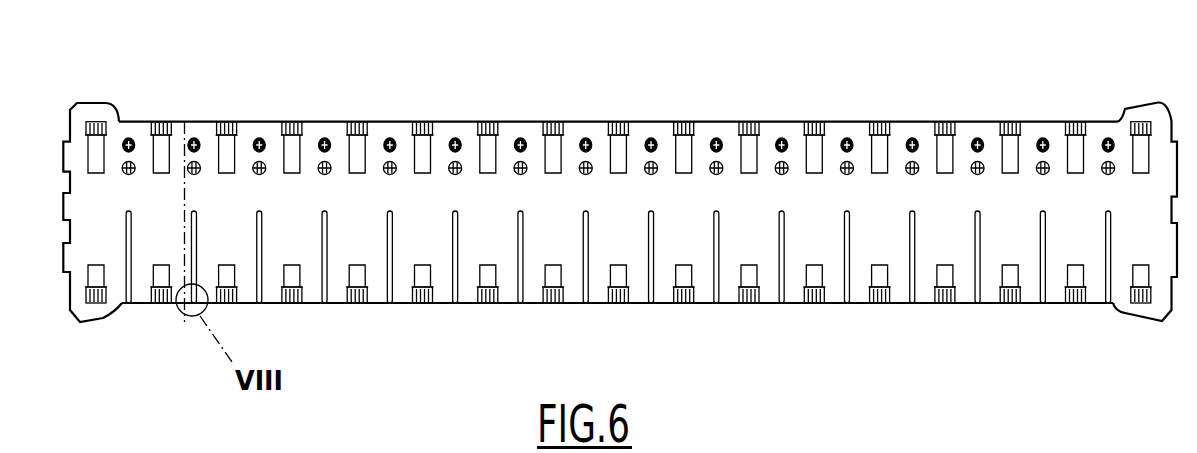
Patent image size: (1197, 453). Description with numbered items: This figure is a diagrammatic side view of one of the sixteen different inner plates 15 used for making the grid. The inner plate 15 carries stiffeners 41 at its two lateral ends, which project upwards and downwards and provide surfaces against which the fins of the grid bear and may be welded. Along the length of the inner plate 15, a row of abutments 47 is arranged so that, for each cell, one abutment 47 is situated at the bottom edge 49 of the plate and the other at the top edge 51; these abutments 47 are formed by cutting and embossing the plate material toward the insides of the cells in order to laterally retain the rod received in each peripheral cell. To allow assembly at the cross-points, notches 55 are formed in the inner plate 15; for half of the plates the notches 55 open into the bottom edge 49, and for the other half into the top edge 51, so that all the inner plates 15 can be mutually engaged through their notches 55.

The inner plate 15 is at (627, 213).
The stiffeners 41 is at (92, 108).
The abutments 47 is at (158, 121).
The bottom edge 49 is at (285, 312).
The top edge 51 is at (311, 117).
The notches 55 is at (188, 247).